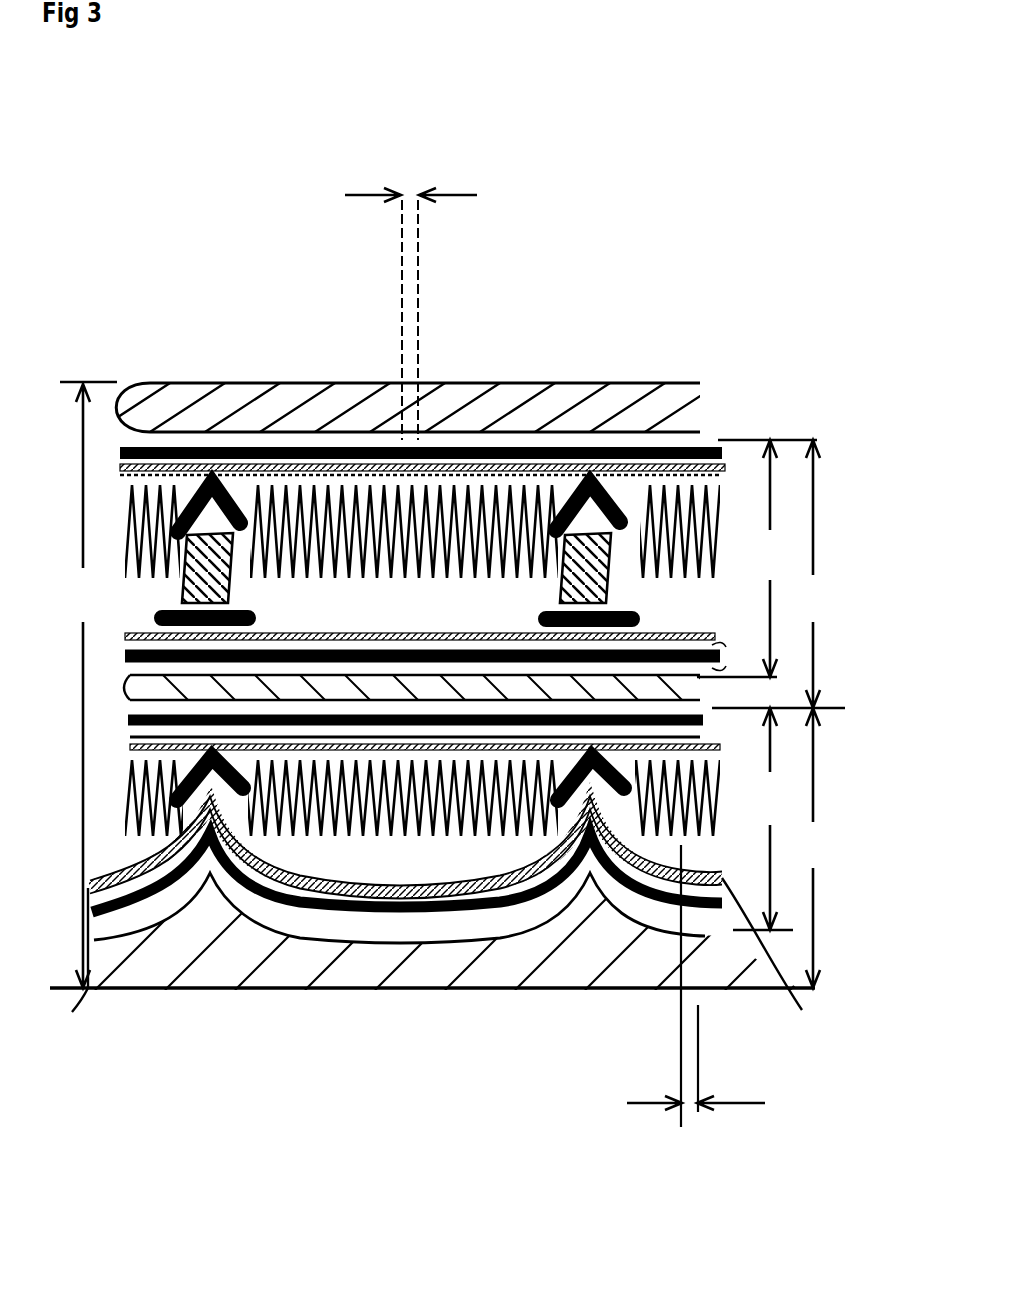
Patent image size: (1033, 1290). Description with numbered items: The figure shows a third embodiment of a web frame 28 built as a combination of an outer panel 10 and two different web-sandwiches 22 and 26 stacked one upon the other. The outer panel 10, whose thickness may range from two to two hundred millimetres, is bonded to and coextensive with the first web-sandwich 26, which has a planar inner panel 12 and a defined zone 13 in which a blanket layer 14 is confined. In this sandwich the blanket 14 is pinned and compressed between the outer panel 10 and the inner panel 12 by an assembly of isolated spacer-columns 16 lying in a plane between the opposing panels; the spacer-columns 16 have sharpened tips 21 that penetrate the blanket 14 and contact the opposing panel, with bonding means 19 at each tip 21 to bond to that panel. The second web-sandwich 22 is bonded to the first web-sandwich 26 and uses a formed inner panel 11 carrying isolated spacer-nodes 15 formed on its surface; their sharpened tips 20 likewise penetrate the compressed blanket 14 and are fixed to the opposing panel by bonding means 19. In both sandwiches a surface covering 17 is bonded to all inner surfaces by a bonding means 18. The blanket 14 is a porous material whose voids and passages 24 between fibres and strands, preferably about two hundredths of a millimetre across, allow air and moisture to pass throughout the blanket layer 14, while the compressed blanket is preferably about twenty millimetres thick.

The outer panel 10 is at (349, 370).
The inner panel 11 is at (283, 1002).
The inner panel 12 is at (648, 692).
The defined open zone 13 is at (771, 685).
The blanket layer 14 is at (452, 484).
The spacer-nodes 15 is at (229, 948).
The spacer-columns 16 is at (259, 480).
The surface covering 17 is at (553, 450).
The bonding means 18 is at (316, 460).
The bonding means 19 is at (183, 522).
The sharpened tips 20 is at (203, 870).
The sharpened tips 21 is at (217, 586).
The web-sandwich 22 is at (824, 848).
The voids and passages 24 is at (555, 651).
The web-sandwich 26 is at (823, 574).
The web frame 28 is at (86, 685).